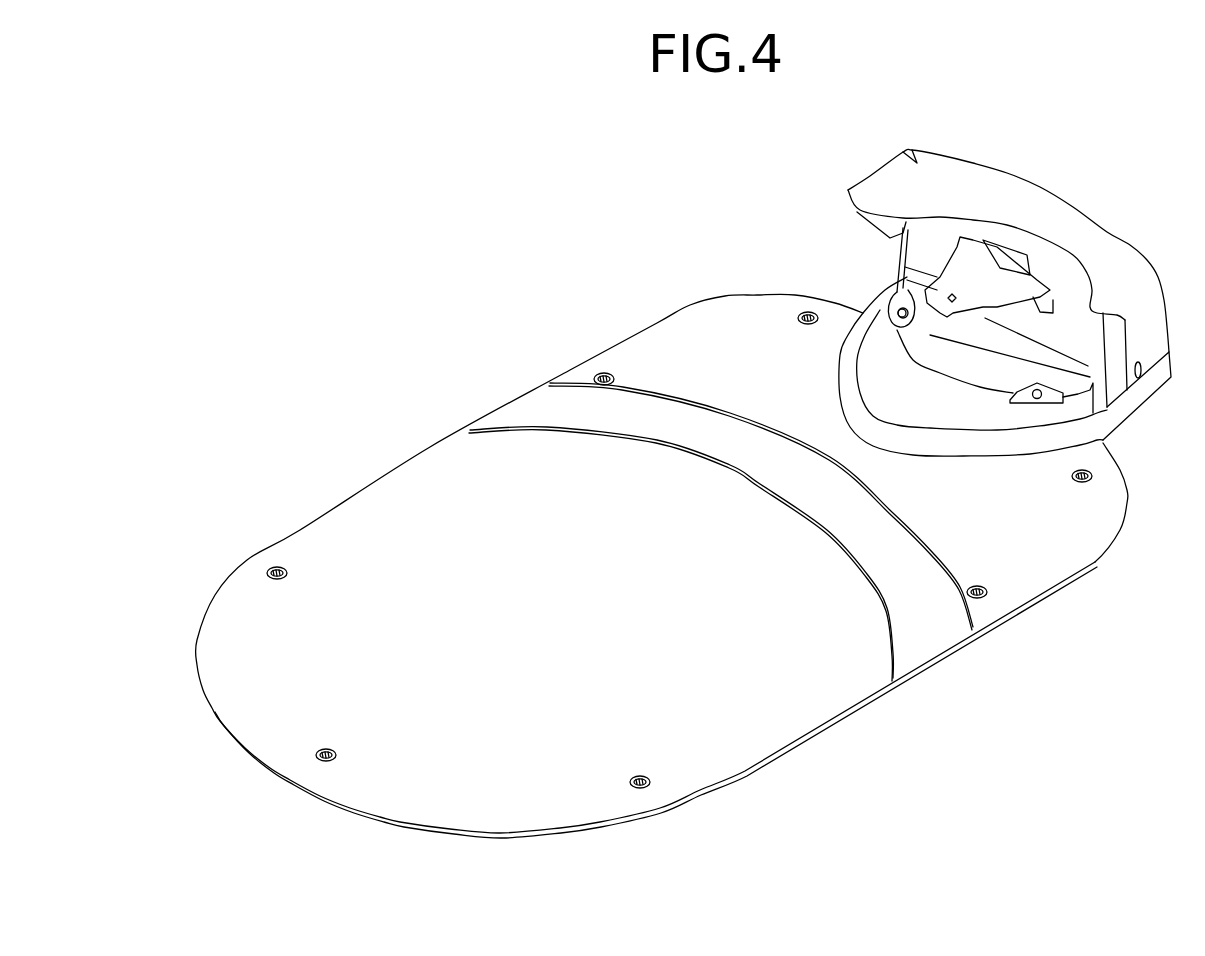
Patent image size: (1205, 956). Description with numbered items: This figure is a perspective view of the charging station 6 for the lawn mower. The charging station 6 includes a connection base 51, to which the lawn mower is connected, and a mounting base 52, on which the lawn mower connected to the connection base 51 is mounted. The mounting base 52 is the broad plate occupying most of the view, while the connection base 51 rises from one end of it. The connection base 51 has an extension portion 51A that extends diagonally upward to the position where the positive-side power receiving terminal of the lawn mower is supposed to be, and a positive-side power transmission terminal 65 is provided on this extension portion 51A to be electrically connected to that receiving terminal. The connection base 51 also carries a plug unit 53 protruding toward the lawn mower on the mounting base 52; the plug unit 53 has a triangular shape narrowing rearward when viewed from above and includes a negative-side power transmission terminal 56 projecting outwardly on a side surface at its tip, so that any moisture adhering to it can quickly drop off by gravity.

The charging station 6 is at (454, 241).
The connection base 51 is at (1090, 210).
The extension portion 51A is at (893, 177).
The mounting base 52 is at (308, 523).
The plug unit 53 is at (903, 263).
The negative-side power transmission terminal 56 is at (945, 268).
The positive-side power transmission terminal 65 is at (860, 209).